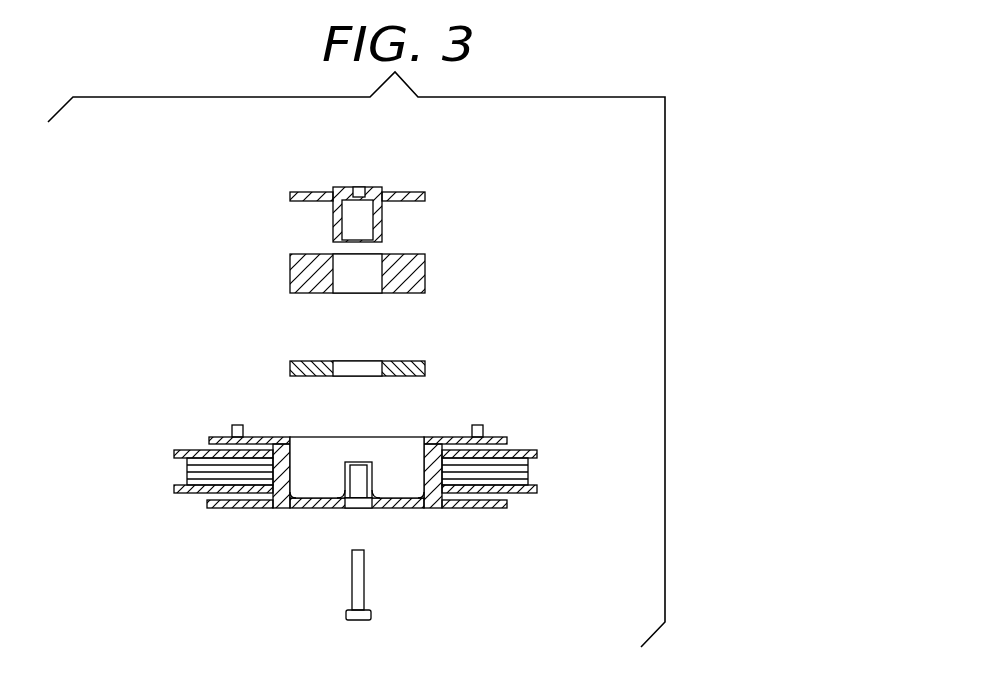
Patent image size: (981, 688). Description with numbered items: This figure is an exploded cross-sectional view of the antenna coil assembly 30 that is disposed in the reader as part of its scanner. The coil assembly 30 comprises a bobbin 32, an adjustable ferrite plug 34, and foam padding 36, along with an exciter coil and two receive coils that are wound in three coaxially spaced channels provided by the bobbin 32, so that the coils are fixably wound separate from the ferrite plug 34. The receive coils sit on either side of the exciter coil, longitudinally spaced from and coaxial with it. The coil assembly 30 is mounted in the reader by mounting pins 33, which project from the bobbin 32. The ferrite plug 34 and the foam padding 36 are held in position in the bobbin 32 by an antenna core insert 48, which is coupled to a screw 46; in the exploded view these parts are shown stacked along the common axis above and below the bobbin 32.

The coil assembly 30 is at (141, 216).
The bobbin 32 is at (538, 455).
The mounting pins 33 is at (228, 425).
The adjustable ferrite plug 34 is at (425, 270).
The foam padding 36 is at (425, 366).
The screw 46 is at (364, 588).
The antenna core insert 48 is at (382, 222).